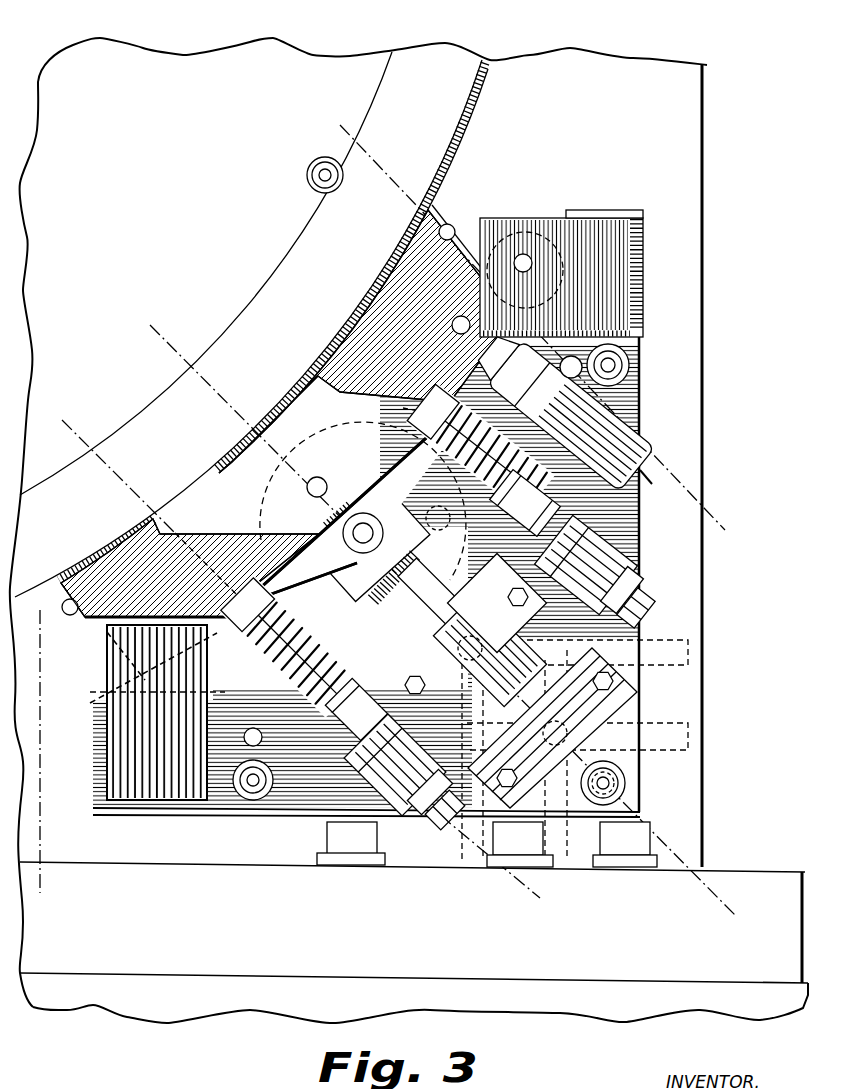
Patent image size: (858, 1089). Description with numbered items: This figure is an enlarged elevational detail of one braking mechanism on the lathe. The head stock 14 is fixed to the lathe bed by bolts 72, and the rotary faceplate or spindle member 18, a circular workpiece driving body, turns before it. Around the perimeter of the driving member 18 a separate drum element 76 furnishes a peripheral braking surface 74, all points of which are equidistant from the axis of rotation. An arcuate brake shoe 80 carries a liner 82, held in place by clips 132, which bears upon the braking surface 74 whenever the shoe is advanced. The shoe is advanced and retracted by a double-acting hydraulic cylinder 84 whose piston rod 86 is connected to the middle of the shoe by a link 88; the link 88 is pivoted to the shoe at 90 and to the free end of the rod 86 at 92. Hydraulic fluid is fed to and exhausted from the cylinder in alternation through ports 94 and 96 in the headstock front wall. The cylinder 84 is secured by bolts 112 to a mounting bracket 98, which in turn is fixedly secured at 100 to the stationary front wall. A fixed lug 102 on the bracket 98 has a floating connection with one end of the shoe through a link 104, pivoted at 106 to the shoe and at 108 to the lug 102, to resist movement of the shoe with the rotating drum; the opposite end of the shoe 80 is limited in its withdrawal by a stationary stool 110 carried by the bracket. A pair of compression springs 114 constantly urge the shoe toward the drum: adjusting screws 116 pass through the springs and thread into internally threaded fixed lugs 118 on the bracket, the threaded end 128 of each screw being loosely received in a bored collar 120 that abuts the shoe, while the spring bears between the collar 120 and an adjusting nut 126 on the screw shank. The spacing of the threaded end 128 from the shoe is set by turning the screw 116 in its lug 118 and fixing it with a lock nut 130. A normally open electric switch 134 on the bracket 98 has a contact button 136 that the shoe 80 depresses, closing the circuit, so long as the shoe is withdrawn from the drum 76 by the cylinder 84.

The head stock 14 is at (763, 872).
The rotary faceplate or spindle member 18 is at (312, 56).
The bolts 72 is at (327, 838).
The peripheral braking surface 74 is at (468, 113).
The drum element 76 is at (439, 58).
The arcuate brake shoe 80 is at (190, 479).
The liner 82 is at (331, 347).
The double-acting hydraulic cylinder 84 is at (556, 690).
The piston rod 86 is at (432, 575).
The link 88 is at (312, 540).
The pivot 90 is at (307, 488).
The pivot 92 is at (378, 518).
The port 94 is at (690, 640).
The port 96 is at (690, 750).
The mounting bracket 98 is at (658, 380).
The securing point 100 is at (630, 360).
The fixed lug 102 is at (586, 235).
The link 104 is at (516, 240).
The pivot 106 is at (455, 322).
The pivot 108 is at (525, 258).
The stationary stool 110 is at (112, 678).
The bolts 112 is at (508, 603).
The compression springs 114 is at (620, 437).
The adjusting screws 116 is at (648, 604).
The internally threaded fixed lugs 118 is at (632, 553).
The bored collar 120 is at (440, 432).
The adjusting nut 126 is at (600, 492).
The threaded end 128 is at (408, 413).
The lock nut 130 is at (630, 583).
The clips 132 is at (460, 232).
The electric switch 134 is at (643, 492).
The contact or button 136 is at (548, 333).